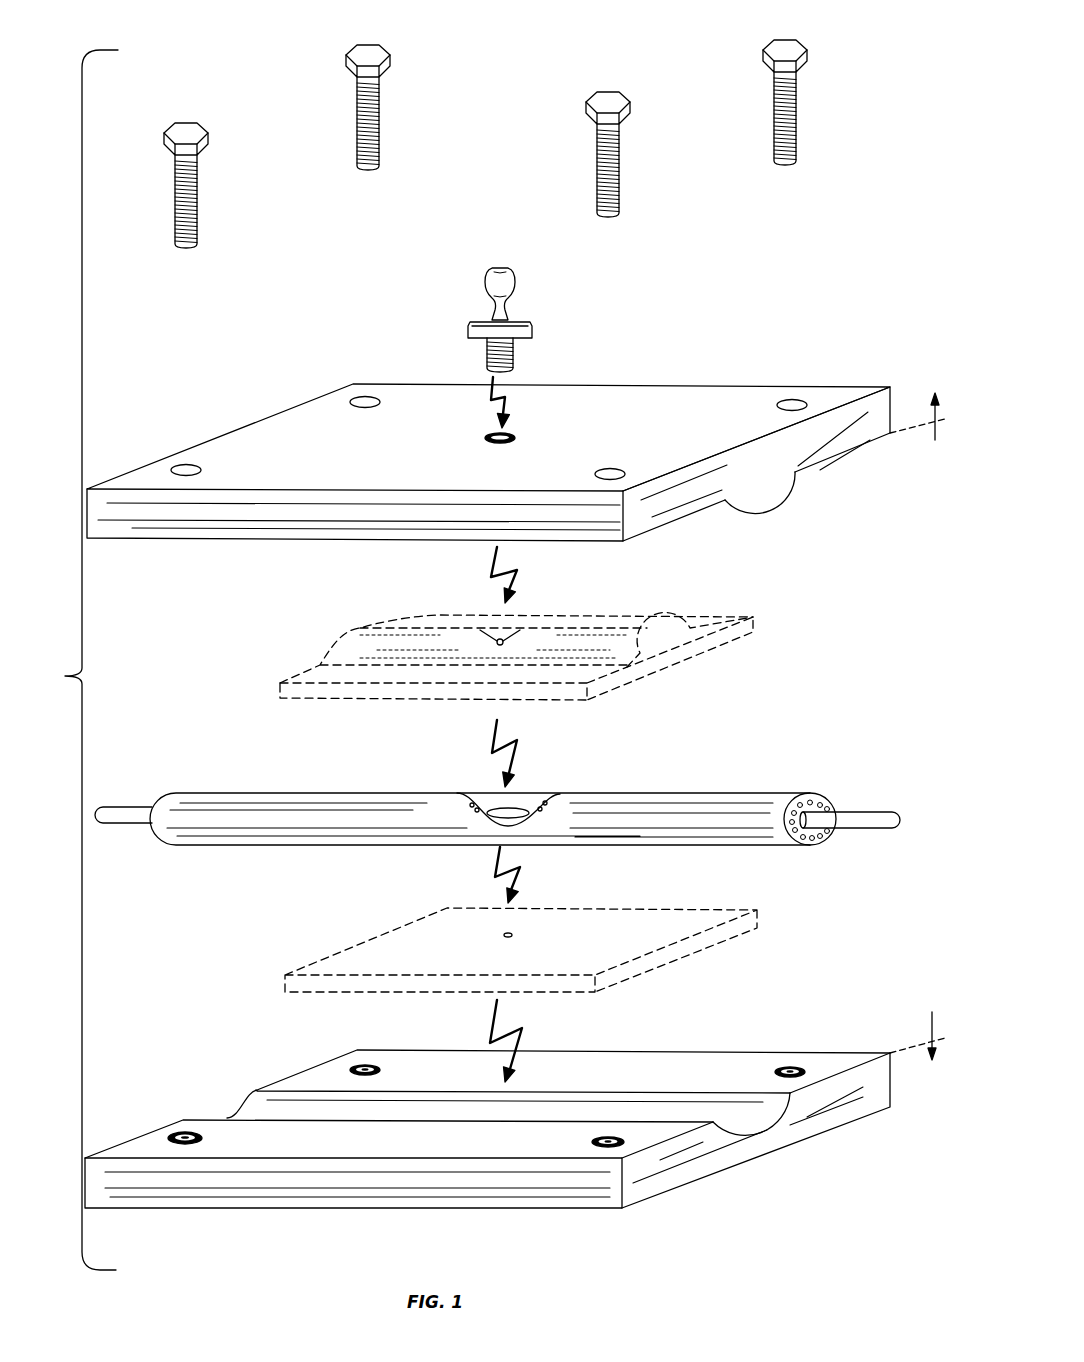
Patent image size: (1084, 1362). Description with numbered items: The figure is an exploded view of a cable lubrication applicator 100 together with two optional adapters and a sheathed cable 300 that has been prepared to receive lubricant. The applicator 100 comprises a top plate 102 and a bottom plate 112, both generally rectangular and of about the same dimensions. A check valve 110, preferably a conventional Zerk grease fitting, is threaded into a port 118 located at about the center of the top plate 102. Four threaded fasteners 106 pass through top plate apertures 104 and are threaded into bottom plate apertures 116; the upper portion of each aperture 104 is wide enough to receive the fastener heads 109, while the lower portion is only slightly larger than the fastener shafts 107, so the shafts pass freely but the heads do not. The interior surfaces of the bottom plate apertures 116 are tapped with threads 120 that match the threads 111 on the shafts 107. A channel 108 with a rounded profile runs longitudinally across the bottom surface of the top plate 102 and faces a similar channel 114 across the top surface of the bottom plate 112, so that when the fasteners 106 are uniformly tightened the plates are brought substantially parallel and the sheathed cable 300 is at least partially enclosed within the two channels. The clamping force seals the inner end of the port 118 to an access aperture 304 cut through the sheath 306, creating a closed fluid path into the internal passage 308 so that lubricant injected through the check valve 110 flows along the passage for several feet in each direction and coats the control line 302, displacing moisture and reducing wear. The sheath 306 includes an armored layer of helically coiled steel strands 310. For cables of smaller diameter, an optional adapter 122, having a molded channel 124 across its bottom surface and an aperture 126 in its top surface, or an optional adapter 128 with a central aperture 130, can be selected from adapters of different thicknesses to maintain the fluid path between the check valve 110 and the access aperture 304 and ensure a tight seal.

The lubrication applicator 100 is at (72, 105).
The top plate 102 is at (519, 412).
The top plate apertures 104 is at (186, 465).
The threaded fasteners 106 is at (515, 162).
The fastener shafts 107 is at (536, 194).
The channel 108 is at (757, 473).
The fastener heads 109 is at (208, 147).
The check valve 110 is at (522, 290).
The threads 111 is at (197, 173).
The bottom plate 112 is at (515, 1124).
The channel 114 is at (237, 1113).
The bottom plate apertures 116 is at (187, 1133).
The port 118 is at (493, 433).
The threads 120 is at (177, 1138).
The adapter 122 is at (462, 637).
The molded channel 124 is at (660, 643).
The aperture 126 is at (500, 632).
The adapter 128 is at (478, 923).
The aperture 130 is at (508, 932).
The sheathed cable 300 is at (498, 795).
The control line 302 is at (138, 805).
The access aperture 304 is at (510, 812).
The sheath 306 is at (697, 795).
The internal passage 308 is at (830, 797).
The steel strands 310 is at (800, 837).